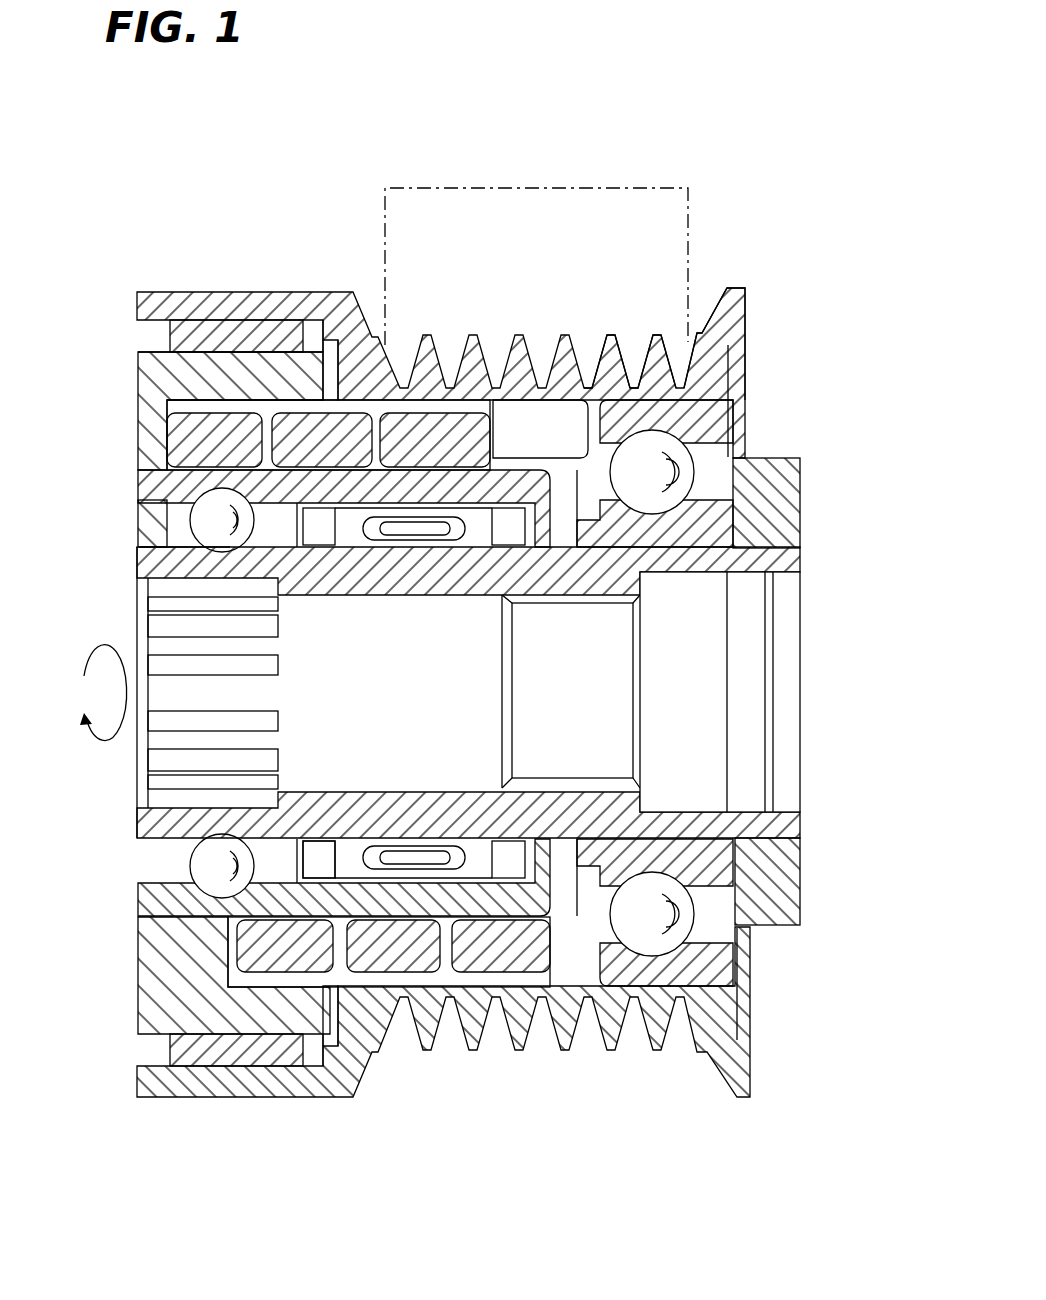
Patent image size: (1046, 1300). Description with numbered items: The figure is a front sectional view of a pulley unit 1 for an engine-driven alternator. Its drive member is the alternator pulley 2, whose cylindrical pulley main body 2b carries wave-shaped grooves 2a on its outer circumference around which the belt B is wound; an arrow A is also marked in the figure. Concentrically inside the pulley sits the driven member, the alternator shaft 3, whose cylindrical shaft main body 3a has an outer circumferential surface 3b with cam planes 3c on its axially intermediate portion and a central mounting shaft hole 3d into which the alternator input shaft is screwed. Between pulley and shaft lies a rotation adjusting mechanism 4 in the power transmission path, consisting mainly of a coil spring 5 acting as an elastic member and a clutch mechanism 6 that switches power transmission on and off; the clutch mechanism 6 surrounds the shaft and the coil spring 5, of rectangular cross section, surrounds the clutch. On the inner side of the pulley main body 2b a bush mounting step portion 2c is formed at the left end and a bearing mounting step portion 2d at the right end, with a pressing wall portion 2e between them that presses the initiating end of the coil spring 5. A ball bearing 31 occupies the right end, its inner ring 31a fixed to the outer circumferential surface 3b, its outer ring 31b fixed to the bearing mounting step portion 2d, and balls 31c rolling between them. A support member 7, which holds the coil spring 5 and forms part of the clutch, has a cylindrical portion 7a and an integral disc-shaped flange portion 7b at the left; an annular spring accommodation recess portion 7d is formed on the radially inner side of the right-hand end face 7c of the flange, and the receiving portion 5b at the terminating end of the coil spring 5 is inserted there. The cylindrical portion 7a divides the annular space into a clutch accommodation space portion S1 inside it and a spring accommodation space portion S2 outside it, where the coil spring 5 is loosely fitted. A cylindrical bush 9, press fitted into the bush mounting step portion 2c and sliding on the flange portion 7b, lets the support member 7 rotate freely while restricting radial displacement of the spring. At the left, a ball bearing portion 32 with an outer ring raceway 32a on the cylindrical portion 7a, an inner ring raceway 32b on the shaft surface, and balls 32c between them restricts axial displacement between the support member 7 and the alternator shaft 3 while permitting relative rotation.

The pulley unit 1 is at (348, 186).
The alternator pulley 2 is at (281, 291).
The wave-shaped grooves 2a is at (618, 345).
The pulley main body 2b is at (590, 345).
The bush mounting step portion 2c is at (228, 330).
The bearing mounting step portion 2d is at (715, 412).
The pressing wall portion 2e is at (535, 425).
The alternator shaft 3 is at (778, 564).
The shaft main body 3a is at (563, 572).
The outer circumferential surface 3b is at (760, 546).
The cam planes 3c is at (360, 850).
The mounting shaft hole 3d is at (572, 777).
The rotation adjusting mechanism 4 is at (128, 918).
The coil spring 5 is at (367, 948).
The receiving portion 5b is at (200, 456).
The clutch mechanism 6 is at (478, 855).
The support member 7 is at (128, 427).
The cylindrical portion 7a is at (213, 487).
The flange portion 7b is at (170, 368).
The end face 7c is at (331, 338).
The spring accommodation recess portion 7d is at (200, 400).
The bush 9 is at (250, 1052).
The ball bearing 31 is at (712, 454).
The inner ring 31a is at (700, 508).
The outer ring 31b is at (708, 428).
The balls 31c is at (700, 485).
The ball bearing portion 32 is at (172, 528).
The outer ring raceway 32a is at (212, 516).
The inner ring raceway 32b is at (176, 566).
The balls 32c is at (185, 542).
The rotation direction A is at (96, 692).
The belt B is at (690, 222).
The clutch accommodation space portion S1 is at (552, 868).
The spring accommodation space portion S2 is at (424, 396).